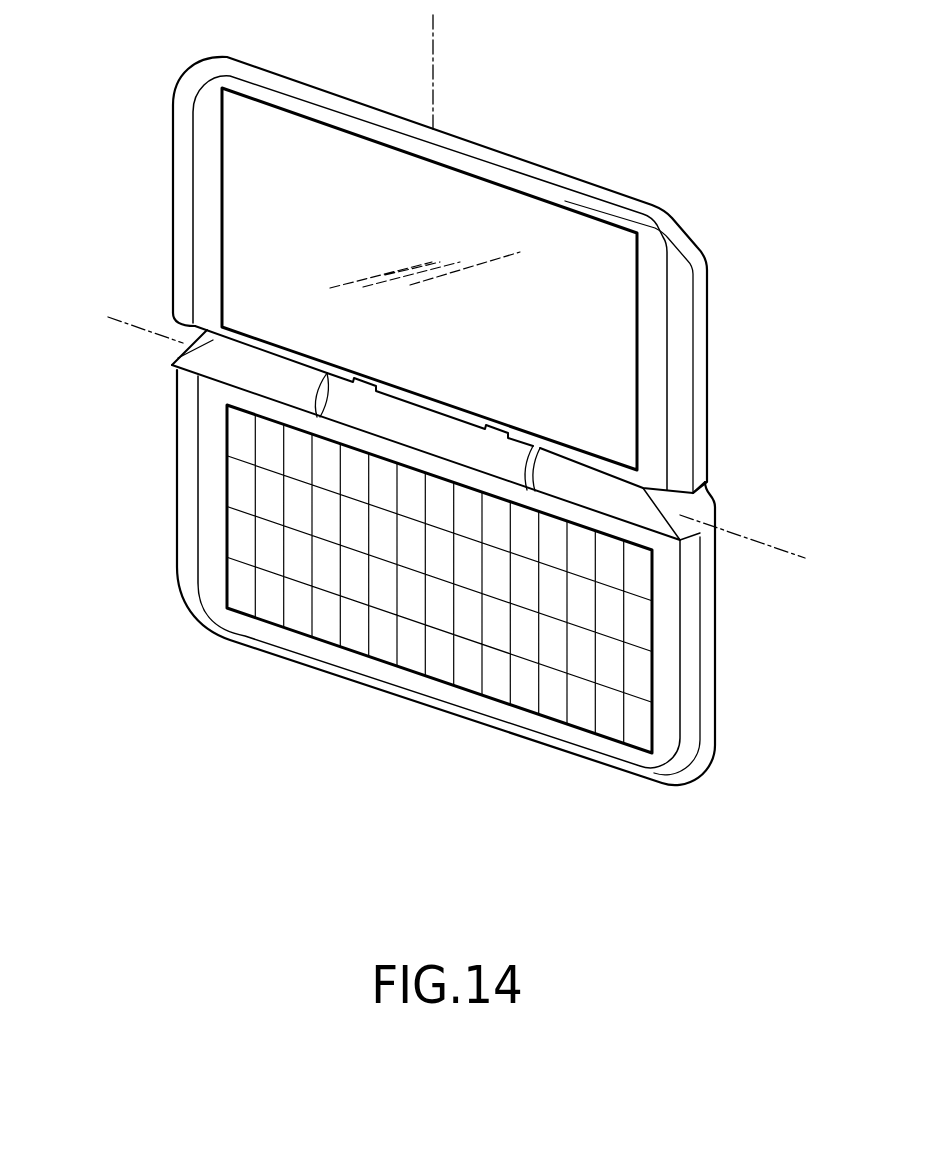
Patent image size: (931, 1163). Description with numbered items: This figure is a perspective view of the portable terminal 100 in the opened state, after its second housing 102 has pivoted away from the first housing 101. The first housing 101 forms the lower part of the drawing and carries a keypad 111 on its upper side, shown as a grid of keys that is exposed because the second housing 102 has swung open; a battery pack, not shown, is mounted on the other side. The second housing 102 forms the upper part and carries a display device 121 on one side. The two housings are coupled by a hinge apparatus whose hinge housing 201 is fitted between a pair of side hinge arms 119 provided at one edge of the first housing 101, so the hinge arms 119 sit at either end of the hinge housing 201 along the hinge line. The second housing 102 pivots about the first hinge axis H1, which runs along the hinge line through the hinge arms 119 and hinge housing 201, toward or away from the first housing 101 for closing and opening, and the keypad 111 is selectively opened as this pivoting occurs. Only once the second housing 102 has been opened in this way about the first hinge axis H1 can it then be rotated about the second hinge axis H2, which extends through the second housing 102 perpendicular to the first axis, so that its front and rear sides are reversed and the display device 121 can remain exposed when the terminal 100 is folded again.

The portable terminal 100 is at (438, 415).
The first housing 101 is at (496, 592).
The second housing 102 is at (494, 275).
The keypad 111 is at (442, 673).
The side hinge arms 119 is at (200, 362).
The display device 121 is at (583, 240).
The hinge housing 201 is at (342, 402).
The first hinge axis H1 is at (777, 547).
The second hinge axis H2 is at (433, 73).